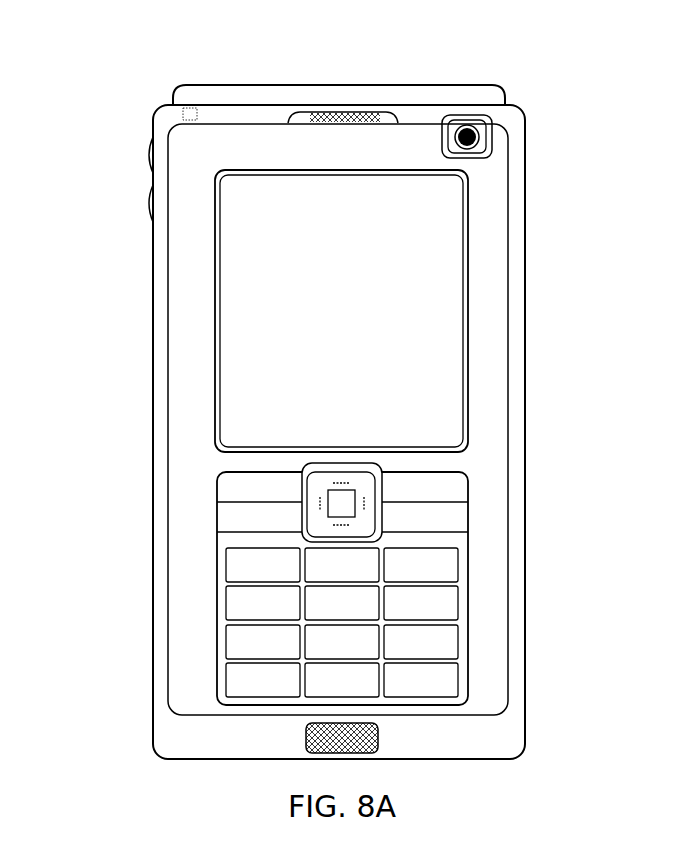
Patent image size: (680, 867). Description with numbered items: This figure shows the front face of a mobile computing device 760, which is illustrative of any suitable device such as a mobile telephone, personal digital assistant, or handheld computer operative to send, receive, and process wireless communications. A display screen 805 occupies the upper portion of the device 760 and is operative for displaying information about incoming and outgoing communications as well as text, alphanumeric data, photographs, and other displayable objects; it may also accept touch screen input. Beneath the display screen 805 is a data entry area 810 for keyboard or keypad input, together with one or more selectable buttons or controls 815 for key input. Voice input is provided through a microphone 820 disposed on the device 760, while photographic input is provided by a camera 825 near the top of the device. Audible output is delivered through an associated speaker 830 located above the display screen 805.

The mobile computing device 760 is at (152, 109).
The speaker 830 is at (383, 116).
The camera 825 is at (493, 145).
The display screen 805 is at (247, 296).
The data entry area 810 is at (217, 512).
The selectable buttons or controls 815 is at (237, 602).
The microphone 820 is at (307, 740).